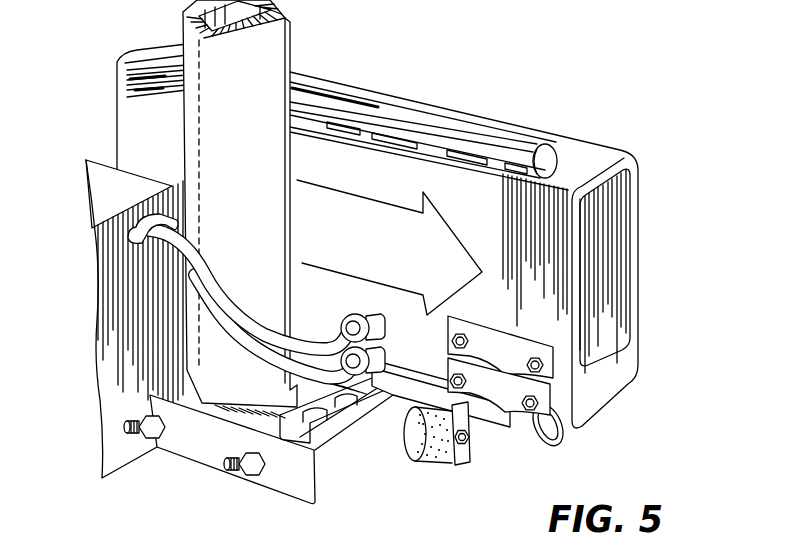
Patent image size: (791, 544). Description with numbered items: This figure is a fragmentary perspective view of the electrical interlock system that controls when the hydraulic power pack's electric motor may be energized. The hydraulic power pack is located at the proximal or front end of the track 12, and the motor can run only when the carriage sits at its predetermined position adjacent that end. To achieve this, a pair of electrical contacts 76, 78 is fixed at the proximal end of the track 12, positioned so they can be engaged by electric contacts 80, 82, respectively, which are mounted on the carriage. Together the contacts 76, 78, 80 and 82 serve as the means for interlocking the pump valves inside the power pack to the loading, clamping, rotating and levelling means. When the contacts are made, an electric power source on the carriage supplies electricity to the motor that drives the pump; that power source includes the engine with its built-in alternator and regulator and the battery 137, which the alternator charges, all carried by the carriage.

The track 12 is at (599, 116).
The electrical contact 76 is at (485, 352).
The electrical contact 78 is at (492, 402).
The electric contact 80 is at (372, 314).
The electric contact 82 is at (386, 349).
The battery 137 is at (108, 387).